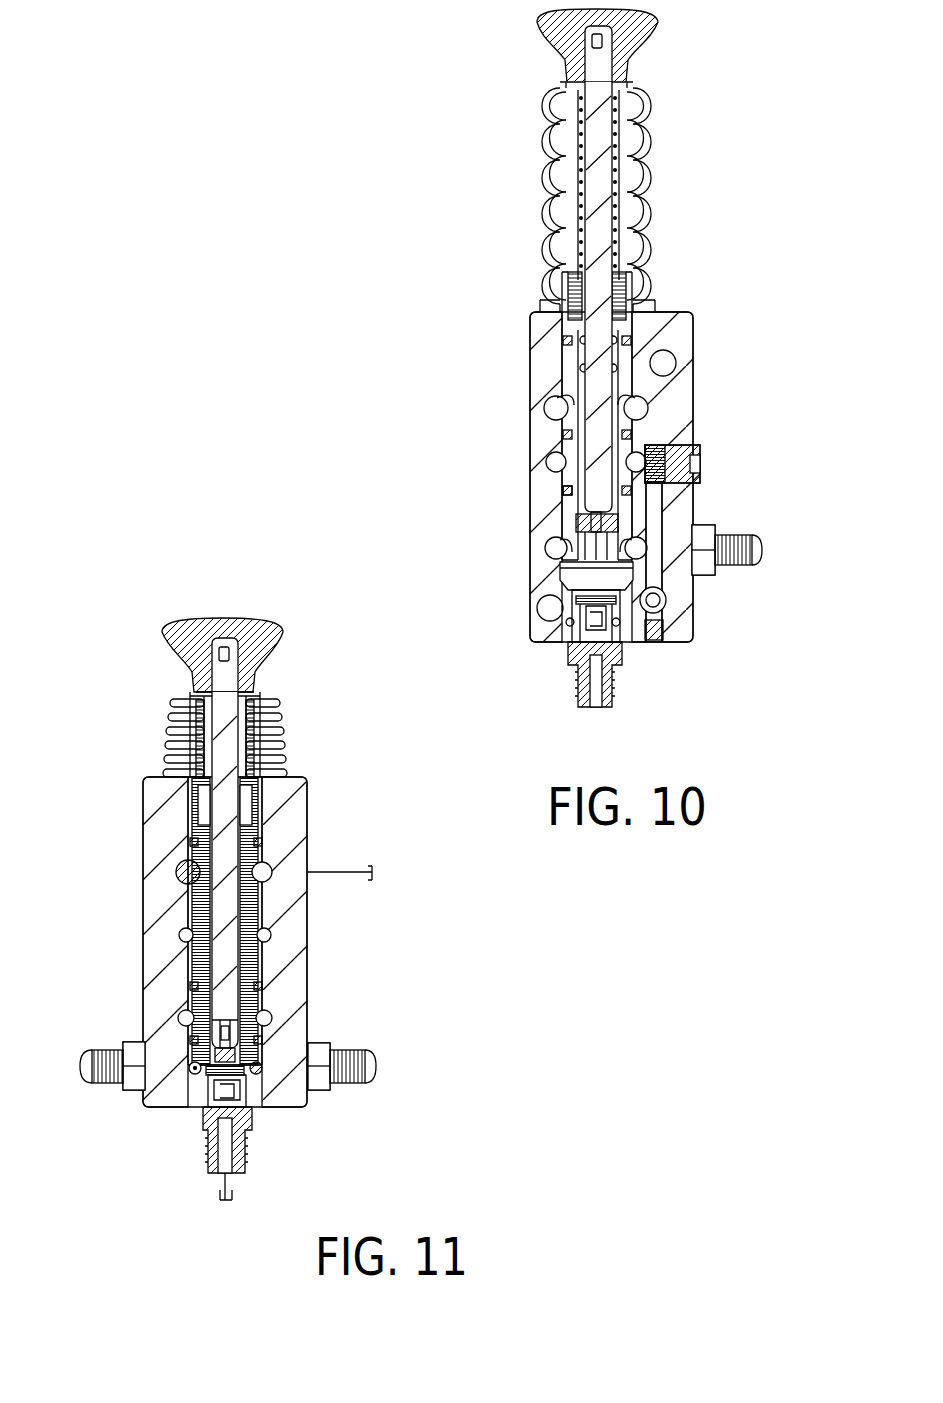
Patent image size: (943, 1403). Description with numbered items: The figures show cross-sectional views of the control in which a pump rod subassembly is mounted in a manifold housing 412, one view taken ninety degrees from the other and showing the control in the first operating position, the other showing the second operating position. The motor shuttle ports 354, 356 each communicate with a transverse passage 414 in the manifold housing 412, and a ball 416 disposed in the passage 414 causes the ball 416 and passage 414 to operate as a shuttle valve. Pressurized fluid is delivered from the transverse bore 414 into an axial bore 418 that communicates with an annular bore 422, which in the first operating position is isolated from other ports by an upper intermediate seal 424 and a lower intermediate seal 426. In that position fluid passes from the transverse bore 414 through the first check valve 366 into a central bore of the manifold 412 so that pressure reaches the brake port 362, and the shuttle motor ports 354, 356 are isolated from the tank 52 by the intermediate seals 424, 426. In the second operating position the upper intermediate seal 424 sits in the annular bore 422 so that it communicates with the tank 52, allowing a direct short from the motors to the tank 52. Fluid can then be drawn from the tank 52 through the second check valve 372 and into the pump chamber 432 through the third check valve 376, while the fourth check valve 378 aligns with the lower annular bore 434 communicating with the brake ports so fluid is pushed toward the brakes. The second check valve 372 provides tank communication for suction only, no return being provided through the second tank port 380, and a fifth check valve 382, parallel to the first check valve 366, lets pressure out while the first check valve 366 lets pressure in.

In FIG. 10, the manifold housing 412 is at (678, 330).
In FIG. 10, the pump chamber 432 is at (592, 410).
In FIG. 11, the pump chamber 432 is at (268, 998).
In FIG. 10, the upper intermediate seal 424 is at (560, 432).
In FIG. 11, the upper intermediate seal 424 is at (185, 936).
In FIG. 10, the annular bore 422 is at (550, 466).
In FIG. 11, the annular bore 422 is at (268, 938).
In FIG. 10, the lower intermediate seal 426 is at (560, 493).
In FIG. 10, the lower annular bore 434 is at (545, 548).
In FIG. 11, the lower annular bore 434 is at (265, 1020).
In FIG. 10, the third check valve 376 is at (540, 544).
In FIG. 11, the third check valve 376 is at (195, 1018).
In FIG. 10, the fourth check valve 378 is at (657, 530).
In FIG. 10, the axial bore 418 is at (633, 533).
In FIG. 10, the brake port 362 is at (762, 550).
In FIG. 10, the ball 416 is at (667, 600).
In FIG. 10, the passage 414 is at (668, 628).
In FIG. 10, the second tank port 380 is at (582, 688).
In FIG. 11, the tank 52 is at (378, 870).
In FIG. 11, the motor shuttle port 354 is at (88, 1078).
In FIG. 11, the motor shuttle port 356 is at (372, 1078).
In FIG. 11, the fifth check valve 382 is at (198, 1072).
In FIG. 11, the second check valve 372 is at (207, 1100).
In FIG. 11, the first check valve 366 is at (260, 1072).